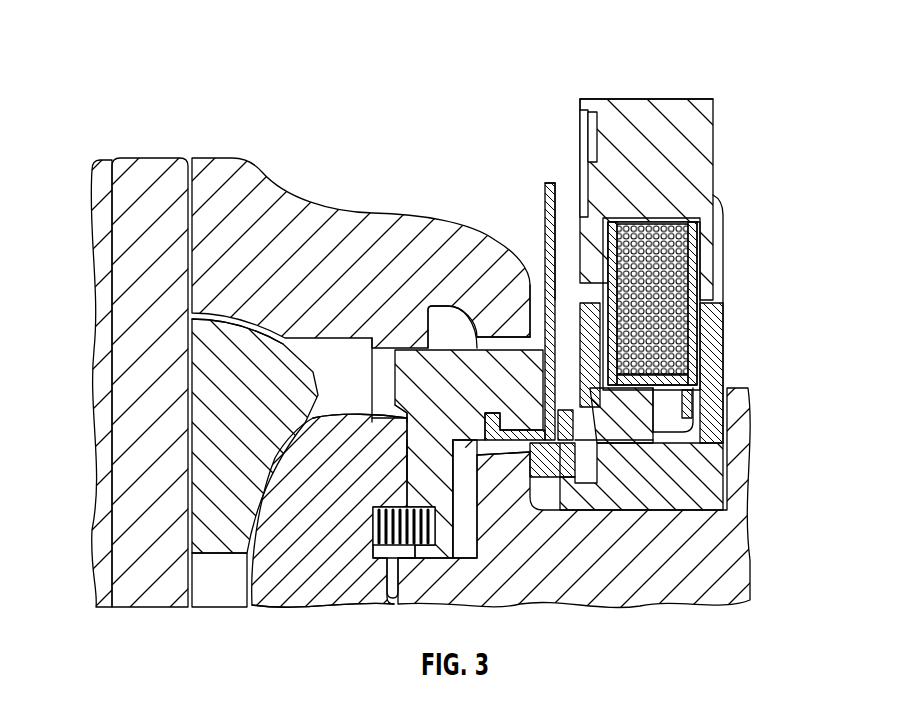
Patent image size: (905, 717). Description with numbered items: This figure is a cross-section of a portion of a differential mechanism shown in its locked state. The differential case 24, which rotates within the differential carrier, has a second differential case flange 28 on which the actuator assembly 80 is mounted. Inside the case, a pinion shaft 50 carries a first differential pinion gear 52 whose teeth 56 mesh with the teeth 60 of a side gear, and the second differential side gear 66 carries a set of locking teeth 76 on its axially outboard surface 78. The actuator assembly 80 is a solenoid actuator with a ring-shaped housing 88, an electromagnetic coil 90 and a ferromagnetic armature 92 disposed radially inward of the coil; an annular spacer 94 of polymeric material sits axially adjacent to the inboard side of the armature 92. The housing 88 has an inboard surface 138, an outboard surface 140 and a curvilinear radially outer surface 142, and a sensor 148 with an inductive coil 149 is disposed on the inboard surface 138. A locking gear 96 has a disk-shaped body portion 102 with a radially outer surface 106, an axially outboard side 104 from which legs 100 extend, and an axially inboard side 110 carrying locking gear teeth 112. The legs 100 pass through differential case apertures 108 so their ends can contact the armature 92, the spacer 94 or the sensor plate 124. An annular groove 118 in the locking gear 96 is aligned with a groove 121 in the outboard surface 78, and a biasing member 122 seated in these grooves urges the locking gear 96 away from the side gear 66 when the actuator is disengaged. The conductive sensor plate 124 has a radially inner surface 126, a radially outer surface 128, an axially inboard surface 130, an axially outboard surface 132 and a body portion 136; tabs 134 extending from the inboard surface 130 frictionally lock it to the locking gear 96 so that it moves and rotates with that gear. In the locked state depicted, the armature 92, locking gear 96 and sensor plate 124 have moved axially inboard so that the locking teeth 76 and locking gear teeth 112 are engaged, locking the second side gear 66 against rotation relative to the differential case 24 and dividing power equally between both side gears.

The differential case 24 is at (210, 154).
The second differential case flange 28 is at (745, 549).
The pinion shaft 50 is at (138, 150).
The first differential pinion gear 52 is at (200, 322).
The teeth of first differential pinion gear 56 is at (273, 453).
The teeth of first differential side gear 60 is at (265, 580).
The second differential side gear 66 is at (310, 590).
The locking teeth 76 is at (395, 484).
The axially outboard surface 78 is at (402, 463).
The actuator assembly 80 is at (637, 226).
The housing 88 is at (705, 263).
The electromagnetic coil 90 is at (680, 297).
The armature 92 is at (652, 495).
The annular spacer 94 is at (565, 470).
The locking gear 96 is at (452, 320).
The legs 100 is at (532, 300).
The body portion 102 is at (408, 436).
The axially outboard side 104 is at (468, 499).
The radially outer surface 106 is at (484, 334).
The differential case apertures 108 is at (492, 449).
The axially inboard side 110 is at (383, 428).
The locking gear teeth 112 is at (393, 407).
The annular groove 118 is at (392, 579).
The groove 121 is at (375, 523).
The biasing member 122 is at (380, 548).
The sensor plate 124 is at (545, 190).
The radially inner surface 126 is at (508, 432).
The radially outer surface 128 is at (552, 182).
The axially inboard surface 130 is at (545, 185).
The axially outboard surface 132 is at (588, 241).
The tabs 134 is at (562, 478).
The body portion 136 is at (570, 326).
The inboard surface 138 is at (580, 105).
The outboard surface 140 is at (720, 141).
The radially outer surface 142 is at (680, 99).
The sensor 148 is at (593, 140).
The inductive coil 149 is at (578, 116).